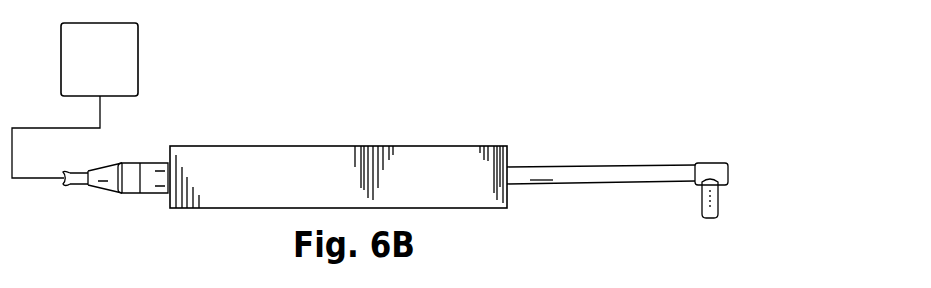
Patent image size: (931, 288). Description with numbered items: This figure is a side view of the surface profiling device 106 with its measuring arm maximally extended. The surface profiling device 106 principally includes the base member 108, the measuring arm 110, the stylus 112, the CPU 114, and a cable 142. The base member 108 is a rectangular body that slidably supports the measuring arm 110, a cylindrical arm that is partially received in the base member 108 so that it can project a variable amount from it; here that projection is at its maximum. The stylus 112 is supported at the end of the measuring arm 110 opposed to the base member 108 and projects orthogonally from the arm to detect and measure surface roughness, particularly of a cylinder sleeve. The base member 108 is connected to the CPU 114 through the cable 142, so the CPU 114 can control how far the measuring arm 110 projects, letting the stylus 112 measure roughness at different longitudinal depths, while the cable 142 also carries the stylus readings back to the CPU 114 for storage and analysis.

The surface profiling device 106 is at (394, 95).
The base member 108 is at (275, 180).
The measuring arm 110 is at (569, 175).
The stylus 112 is at (702, 205).
The CPU 114 is at (61, 70).
The cable 142 is at (108, 179).